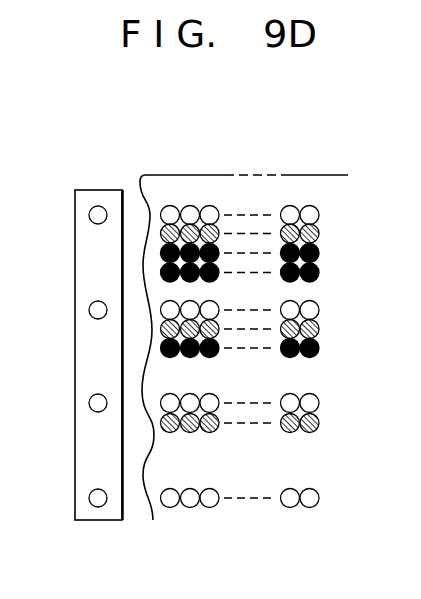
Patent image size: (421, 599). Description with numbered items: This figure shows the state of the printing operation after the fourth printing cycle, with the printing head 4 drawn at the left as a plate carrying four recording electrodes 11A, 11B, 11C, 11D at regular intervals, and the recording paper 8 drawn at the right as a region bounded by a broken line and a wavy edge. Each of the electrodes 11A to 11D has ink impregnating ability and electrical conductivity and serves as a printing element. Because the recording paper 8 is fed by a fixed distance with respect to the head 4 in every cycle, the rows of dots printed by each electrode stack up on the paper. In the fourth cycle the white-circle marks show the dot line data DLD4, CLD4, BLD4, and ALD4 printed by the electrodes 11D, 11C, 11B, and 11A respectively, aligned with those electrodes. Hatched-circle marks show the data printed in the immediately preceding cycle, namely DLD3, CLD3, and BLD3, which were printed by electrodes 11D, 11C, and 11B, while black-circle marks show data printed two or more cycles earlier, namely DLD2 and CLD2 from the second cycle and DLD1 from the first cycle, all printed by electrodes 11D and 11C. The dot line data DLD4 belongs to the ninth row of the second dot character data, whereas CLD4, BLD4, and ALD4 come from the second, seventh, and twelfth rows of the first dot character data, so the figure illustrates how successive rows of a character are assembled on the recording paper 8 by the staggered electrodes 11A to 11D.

The printing head 4 is at (98, 184).
The recording paper 8 is at (310, 191).
The recording electrode 11A is at (89, 215).
The recording electrode 11B is at (89, 310).
The recording electrode 11C is at (89, 403).
The recording electrode 11D is at (89, 498).
The dot line data ALD4 is at (319, 213).
The dot line data BLD3 is at (319, 232).
The dot line data CLD2 is at (319, 251).
The dot line data DLD1 is at (319, 271).
The dot line data BLD4 is at (319, 308).
The dot line data CLD3 is at (319, 327).
The dot line data DLD2 is at (319, 346).
The dot line data CLD4 is at (319, 401).
The dot line data DLD3 is at (319, 421).
The dot line data DLD4 is at (319, 496).